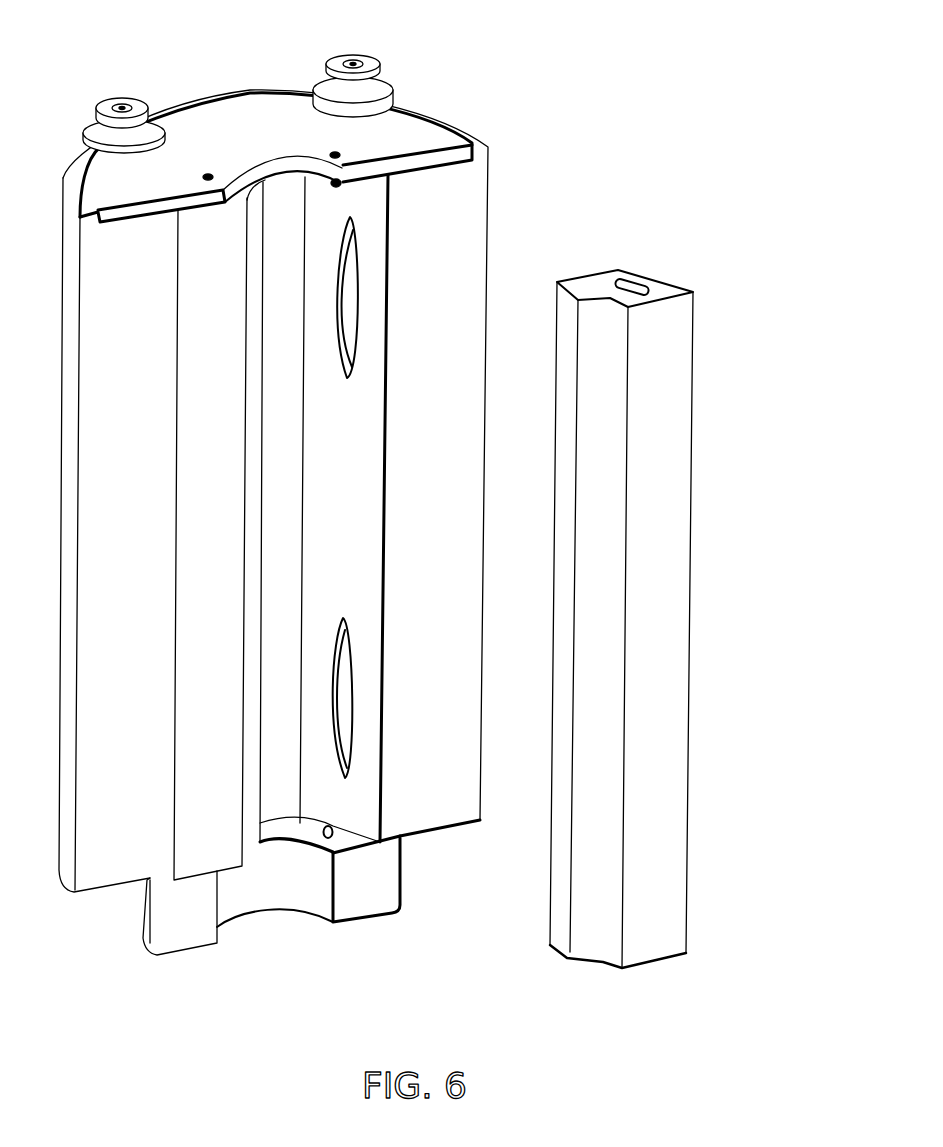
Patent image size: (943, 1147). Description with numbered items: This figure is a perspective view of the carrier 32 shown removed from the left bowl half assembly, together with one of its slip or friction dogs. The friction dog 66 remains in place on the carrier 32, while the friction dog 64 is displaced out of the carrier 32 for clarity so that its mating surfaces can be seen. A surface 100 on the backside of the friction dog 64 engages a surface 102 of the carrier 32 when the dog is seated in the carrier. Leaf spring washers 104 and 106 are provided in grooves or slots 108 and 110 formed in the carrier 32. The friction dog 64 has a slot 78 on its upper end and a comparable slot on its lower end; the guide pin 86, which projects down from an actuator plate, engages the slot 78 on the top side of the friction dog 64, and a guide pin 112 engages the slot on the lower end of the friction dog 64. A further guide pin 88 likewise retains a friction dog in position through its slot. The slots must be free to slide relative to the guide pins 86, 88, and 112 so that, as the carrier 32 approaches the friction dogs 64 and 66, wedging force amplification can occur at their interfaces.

The carrier 32 is at (440, 184).
The guide pin 88 is at (209, 174).
The guide pin 86 is at (338, 155).
The groove or slot 108 is at (360, 228).
The leaf spring washer 104 is at (353, 278).
The surface 100 is at (640, 270).
The slot 78 is at (688, 289).
The friction dog 66 is at (218, 410).
The surface 102 is at (335, 507).
The friction dog 64 is at (655, 520).
The groove or slot 110 is at (357, 630).
The leaf spring washer 106 is at (345, 725).
The guide pin 112 is at (337, 828).